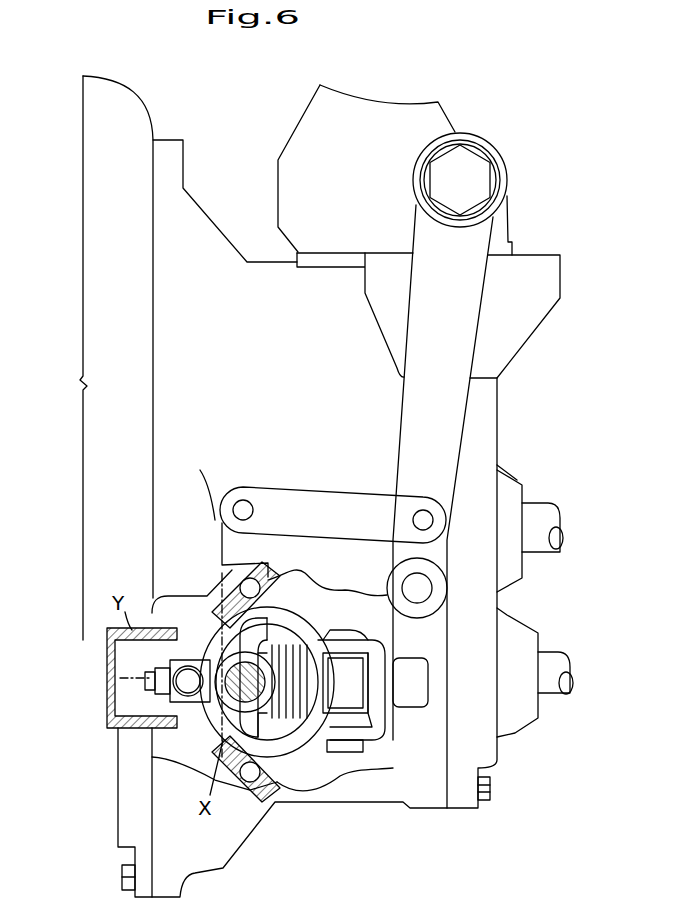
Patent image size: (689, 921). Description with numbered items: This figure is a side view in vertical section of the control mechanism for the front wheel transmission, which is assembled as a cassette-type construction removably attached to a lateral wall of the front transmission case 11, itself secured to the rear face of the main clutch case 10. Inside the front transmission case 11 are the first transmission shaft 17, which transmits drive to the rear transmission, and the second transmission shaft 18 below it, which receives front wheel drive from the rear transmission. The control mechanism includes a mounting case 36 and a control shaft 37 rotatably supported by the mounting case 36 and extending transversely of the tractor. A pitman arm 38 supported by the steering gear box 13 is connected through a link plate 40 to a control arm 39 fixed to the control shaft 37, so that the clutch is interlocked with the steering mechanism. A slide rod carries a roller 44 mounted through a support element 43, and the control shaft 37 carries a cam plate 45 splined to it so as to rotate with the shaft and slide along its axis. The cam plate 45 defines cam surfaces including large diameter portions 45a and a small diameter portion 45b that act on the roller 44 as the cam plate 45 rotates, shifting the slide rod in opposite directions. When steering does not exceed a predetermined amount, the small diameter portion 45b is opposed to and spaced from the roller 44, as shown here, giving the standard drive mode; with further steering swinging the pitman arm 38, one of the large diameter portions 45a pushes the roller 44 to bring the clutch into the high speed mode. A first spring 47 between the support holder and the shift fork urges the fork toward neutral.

The main clutch case 10 is at (83, 440).
The front transmission case 11 is at (390, 795).
The steering gear box 13 is at (437, 117).
The first transmission shaft 17 is at (550, 522).
The second transmission shaft 18 is at (547, 700).
The mounting case 36 is at (303, 750).
The control shaft 37 is at (268, 760).
The pitman arm 38 is at (452, 425).
The control arm 39 is at (222, 540).
The link plate 40 is at (342, 497).
The support element 43 is at (107, 690).
The roller 44 is at (180, 660).
The cam plate 45 is at (154, 687).
The large diameter portions 45a is at (195, 755).
The small diameter portion 45b is at (195, 740).
The first spring 47 is at (307, 620).